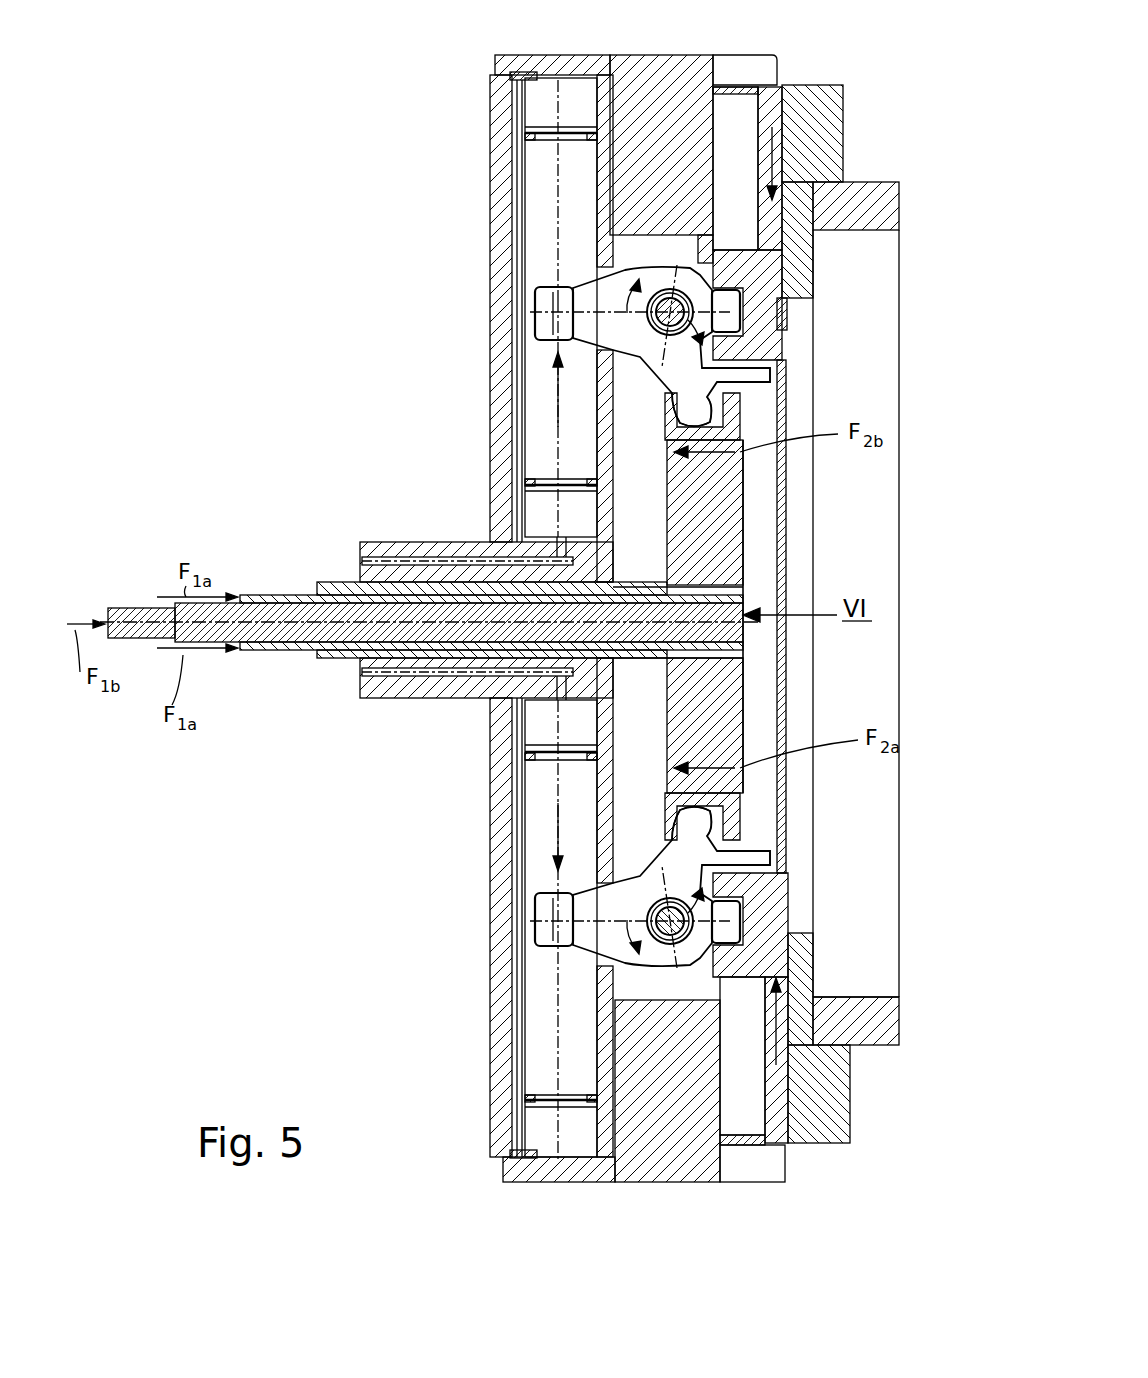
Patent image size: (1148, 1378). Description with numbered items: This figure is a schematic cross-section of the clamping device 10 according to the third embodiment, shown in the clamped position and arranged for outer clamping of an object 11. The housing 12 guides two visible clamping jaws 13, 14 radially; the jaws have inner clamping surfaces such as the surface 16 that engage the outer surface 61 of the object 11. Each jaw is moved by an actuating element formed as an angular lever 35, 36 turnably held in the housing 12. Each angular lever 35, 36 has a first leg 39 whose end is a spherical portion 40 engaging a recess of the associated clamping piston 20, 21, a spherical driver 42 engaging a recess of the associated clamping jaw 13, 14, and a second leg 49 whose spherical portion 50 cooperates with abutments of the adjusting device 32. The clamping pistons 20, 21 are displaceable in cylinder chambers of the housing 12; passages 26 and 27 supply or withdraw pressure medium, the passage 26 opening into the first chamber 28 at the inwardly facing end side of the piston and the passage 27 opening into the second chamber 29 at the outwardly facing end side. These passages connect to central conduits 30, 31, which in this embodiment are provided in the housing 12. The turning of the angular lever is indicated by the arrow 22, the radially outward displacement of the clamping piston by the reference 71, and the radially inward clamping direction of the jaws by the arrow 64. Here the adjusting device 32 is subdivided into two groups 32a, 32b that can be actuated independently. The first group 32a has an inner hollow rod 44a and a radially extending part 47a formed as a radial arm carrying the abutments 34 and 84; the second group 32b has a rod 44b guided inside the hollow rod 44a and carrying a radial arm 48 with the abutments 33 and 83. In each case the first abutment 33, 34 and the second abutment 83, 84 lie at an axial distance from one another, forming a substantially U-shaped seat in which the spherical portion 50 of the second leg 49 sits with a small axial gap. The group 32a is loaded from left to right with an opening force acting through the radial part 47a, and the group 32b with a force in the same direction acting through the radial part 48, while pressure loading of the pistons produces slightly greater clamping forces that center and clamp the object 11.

The clamping device 10 is at (893, 176).
The object 11 is at (870, 1014).
The housing 12 is at (480, 705).
The clamping jaw 13 is at (780, 157).
The clamping jaw 14 is at (793, 1078).
The inner clamping surface 16 is at (850, 995).
The clamping piston 20 is at (541, 436).
The clamping piston 21 is at (550, 1045).
The arrow 22 is at (566, 353).
The passage 26 is at (558, 549).
The passage 27 is at (510, 74).
The first chamber 28 is at (548, 523).
The second chamber 29 is at (545, 108).
The central conduit 30 is at (373, 548).
The central conduit 31 is at (598, 318).
The central adjusting device 32 is at (752, 576).
The first group of adjusting device 32a is at (743, 647).
The second group of adjusting device 32b is at (710, 597).
The first abutment 33 is at (658, 410).
The first abutment 34 is at (657, 825).
The angular lever 35 is at (648, 272).
The angular lever 36 is at (612, 985).
The first leg 39 is at (590, 292).
The spherical portion 40 is at (552, 335).
The driver 42 is at (745, 297).
The inner hollow rod 44a is at (322, 590).
The rod 44b is at (270, 642).
The radially extending part 47a is at (700, 707).
The radially extending part 48 is at (700, 513).
The second leg 49 is at (772, 365).
The spherical portion 50 is at (784, 400).
The outer surface 61 is at (800, 175).
The clamping direction arrow 64 is at (772, 150).
The piston displacement 71 is at (553, 398).
The second abutment 83 is at (700, 412).
The second abutment 84 is at (703, 833).